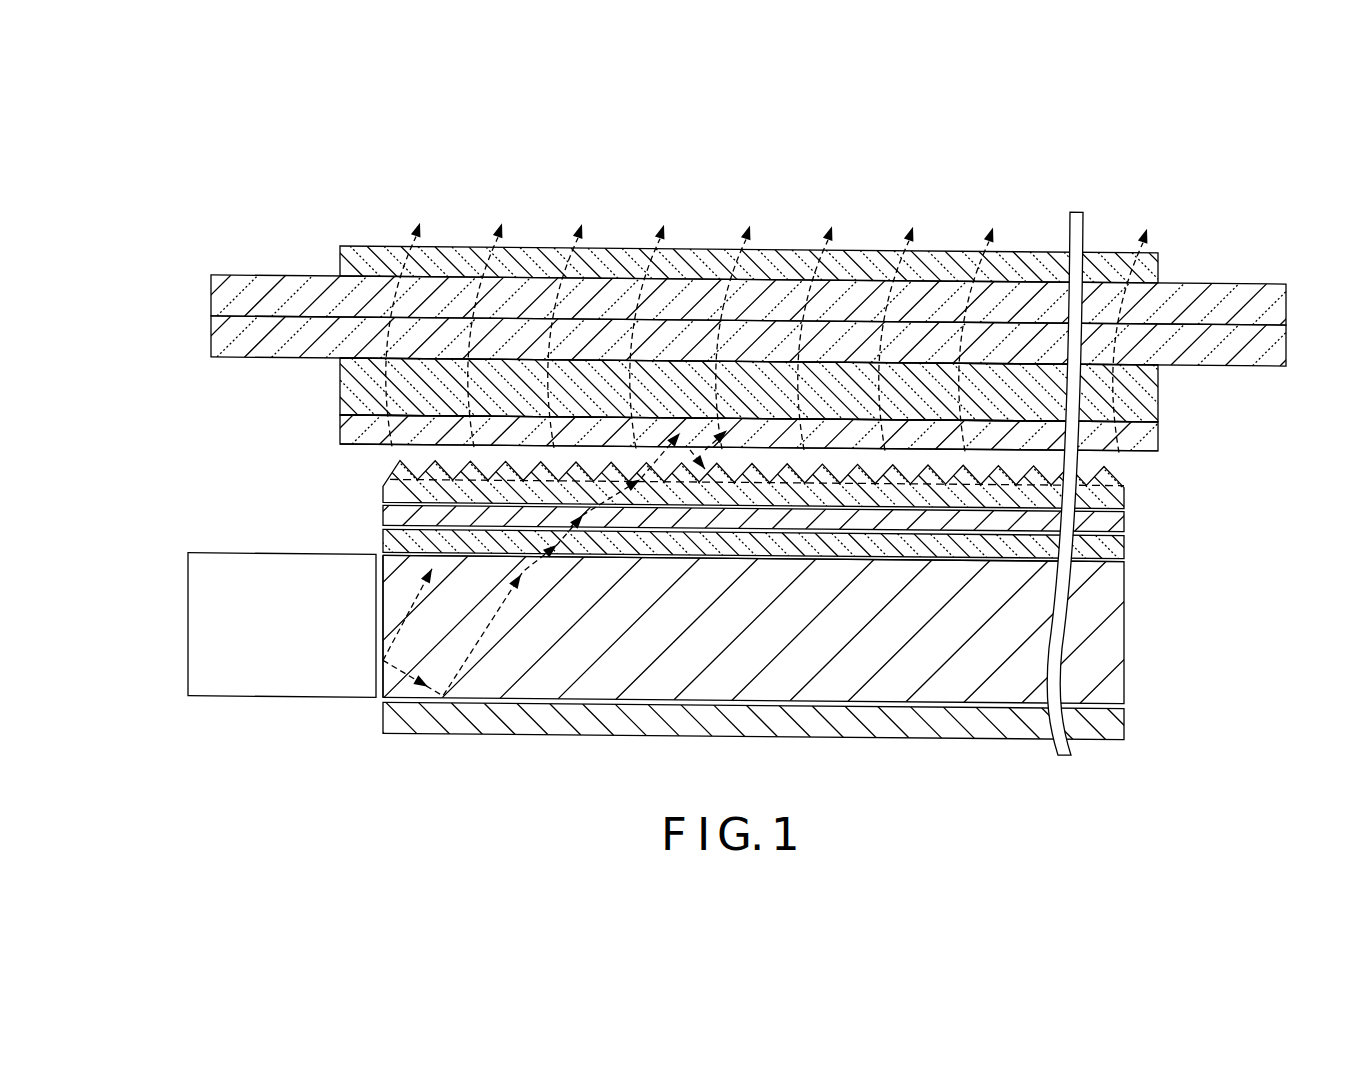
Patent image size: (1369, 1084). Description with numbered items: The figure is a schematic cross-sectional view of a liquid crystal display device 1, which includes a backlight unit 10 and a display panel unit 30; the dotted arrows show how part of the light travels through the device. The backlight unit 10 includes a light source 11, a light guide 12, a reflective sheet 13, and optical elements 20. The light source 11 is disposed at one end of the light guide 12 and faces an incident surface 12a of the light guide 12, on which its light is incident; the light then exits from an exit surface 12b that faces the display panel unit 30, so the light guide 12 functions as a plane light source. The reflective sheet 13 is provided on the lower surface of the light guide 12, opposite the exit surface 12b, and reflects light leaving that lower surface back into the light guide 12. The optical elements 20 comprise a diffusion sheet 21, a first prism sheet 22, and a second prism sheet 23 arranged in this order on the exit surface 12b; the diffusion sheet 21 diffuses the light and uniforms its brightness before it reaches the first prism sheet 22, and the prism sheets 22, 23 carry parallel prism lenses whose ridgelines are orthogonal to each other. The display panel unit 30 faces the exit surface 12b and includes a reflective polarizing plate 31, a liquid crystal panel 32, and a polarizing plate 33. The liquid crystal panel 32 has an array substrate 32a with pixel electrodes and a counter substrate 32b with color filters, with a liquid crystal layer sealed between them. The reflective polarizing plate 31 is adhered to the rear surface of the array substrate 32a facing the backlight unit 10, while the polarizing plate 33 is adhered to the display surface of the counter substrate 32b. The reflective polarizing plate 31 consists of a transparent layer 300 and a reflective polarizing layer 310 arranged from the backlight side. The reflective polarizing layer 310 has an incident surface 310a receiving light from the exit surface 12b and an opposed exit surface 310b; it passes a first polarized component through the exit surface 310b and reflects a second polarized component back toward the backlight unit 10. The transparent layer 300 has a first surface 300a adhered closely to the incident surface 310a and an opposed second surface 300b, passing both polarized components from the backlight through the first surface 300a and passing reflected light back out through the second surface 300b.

The liquid crystal display device 1 is at (718, 463).
The backlight unit 10 is at (763, 597).
The light source 11 is at (233, 700).
The light guide 12 is at (803, 655).
The incident surface 12a is at (372, 661).
The exit surface 12b is at (1101, 553).
The reflective sheet 13 is at (1118, 723).
The optical elements 20 is at (750, 507).
The diffusion sheet 21 is at (383, 540).
The first prism sheet 22 is at (383, 515).
The second prism sheet 23 is at (383, 488).
The display panel unit 30 is at (718, 351).
The reflective polarizing plate 31 is at (735, 351).
The liquid crystal panel 32 is at (718, 320).
The array substrate 32a is at (211, 337).
The counter substrate 32b is at (211, 300).
The polarizing plate 33 is at (340, 262).
The transparent layer 300 is at (764, 428).
The first surface 300a is at (1132, 413).
The second surface 300b is at (807, 450).
The reflective polarizing layer 310 is at (737, 352).
The incident surface 310a is at (380, 447).
The exit surface 310b is at (434, 340).